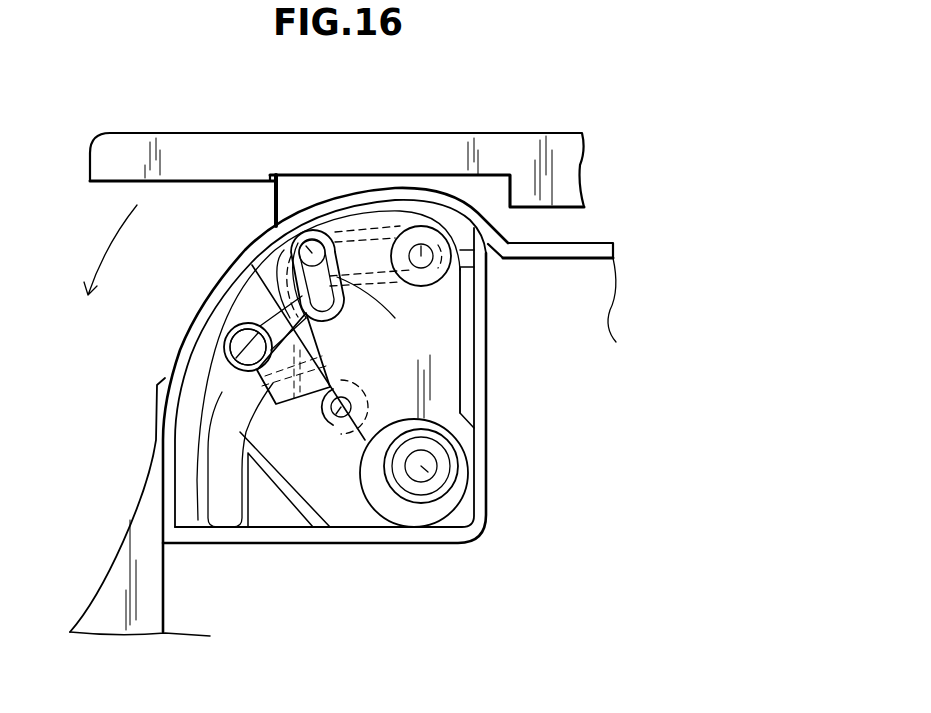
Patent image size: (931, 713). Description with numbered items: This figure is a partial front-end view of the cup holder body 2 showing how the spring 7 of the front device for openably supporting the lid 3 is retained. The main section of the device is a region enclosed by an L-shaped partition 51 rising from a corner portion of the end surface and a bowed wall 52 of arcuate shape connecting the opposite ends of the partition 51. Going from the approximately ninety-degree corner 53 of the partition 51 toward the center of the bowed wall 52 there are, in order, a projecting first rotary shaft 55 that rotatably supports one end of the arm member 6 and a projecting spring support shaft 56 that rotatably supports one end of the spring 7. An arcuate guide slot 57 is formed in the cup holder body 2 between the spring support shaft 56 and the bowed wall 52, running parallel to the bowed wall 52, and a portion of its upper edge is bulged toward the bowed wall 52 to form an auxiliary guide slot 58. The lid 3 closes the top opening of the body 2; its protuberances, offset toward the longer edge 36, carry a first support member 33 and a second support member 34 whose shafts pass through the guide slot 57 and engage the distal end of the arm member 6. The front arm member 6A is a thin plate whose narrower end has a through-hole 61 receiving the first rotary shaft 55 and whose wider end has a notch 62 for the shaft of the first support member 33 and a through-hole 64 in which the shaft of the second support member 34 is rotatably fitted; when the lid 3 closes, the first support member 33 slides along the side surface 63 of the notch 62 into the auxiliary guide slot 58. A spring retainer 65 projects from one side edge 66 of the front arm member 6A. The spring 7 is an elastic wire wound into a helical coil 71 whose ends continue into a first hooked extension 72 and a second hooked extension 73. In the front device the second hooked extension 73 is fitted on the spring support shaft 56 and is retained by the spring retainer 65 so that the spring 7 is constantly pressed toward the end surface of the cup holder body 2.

The cup holder body 2 is at (598, 243).
The lid 3 is at (548, 148).
The arm member 6 is at (450, 364).
The front arm member 6A is at (549, 340).
The spring 7 is at (198, 326).
The first support member 33 is at (298, 248).
The second support member 34 is at (421, 254).
The longer edge 36 is at (107, 148).
The L-shaped partition 51 is at (383, 540).
The bowed wall 52 is at (175, 352).
The corner 53 is at (470, 536).
The first rotary shaft 55 is at (428, 472).
The spring support shaft 56 is at (339, 418).
The guide slot 57 is at (222, 398).
The auxiliary guide slot 58 is at (308, 242).
The through-hole 61 is at (457, 452).
The notch 62 is at (348, 322).
The side surface 63 is at (340, 280).
The through-hole 64 is at (445, 263).
The spring retainer 65 is at (270, 425).
The side edge 66 is at (262, 312).
The helical coil 71 is at (232, 323).
The first hooked extension 72 is at (334, 262).
The second hooked extension 73 is at (316, 396).